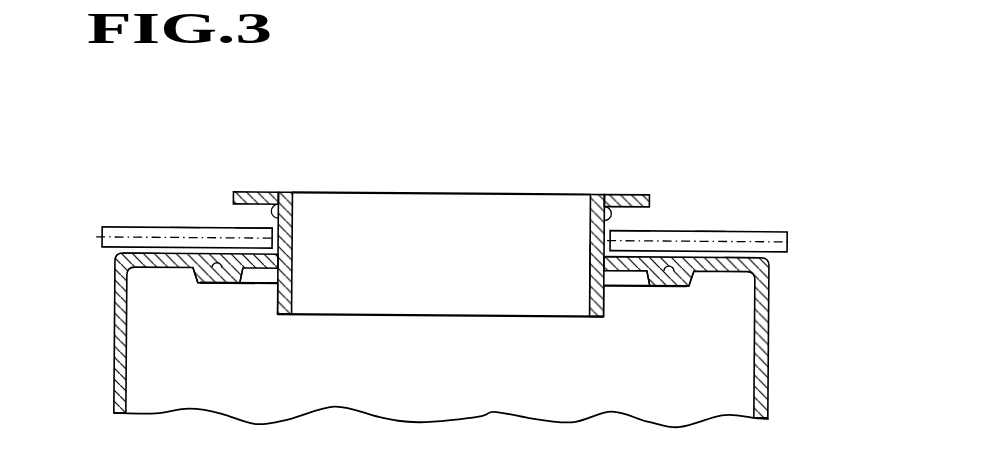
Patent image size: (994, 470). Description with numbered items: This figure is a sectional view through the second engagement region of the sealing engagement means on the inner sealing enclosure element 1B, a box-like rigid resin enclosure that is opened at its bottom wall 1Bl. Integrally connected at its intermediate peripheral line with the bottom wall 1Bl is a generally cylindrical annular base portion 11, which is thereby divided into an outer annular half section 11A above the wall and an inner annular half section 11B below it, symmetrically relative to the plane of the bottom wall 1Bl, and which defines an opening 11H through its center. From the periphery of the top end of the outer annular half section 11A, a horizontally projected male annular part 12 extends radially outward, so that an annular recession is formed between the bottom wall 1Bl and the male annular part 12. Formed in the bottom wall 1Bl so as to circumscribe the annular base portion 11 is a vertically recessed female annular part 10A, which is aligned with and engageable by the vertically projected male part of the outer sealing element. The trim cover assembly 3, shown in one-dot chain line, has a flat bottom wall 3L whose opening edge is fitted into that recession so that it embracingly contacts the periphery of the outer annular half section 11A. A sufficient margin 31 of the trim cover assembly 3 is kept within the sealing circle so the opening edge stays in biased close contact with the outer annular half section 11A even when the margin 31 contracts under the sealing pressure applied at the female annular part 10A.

The inner sealing enclosure element 1B is at (793, 327).
The bottom wall 1Bl is at (128, 252).
The vertically recessed female annular part 10A is at (216, 267).
The annular base portion 11 is at (293, 283).
The outer annular half section 11A is at (270, 191).
The inner annular half section 11B is at (278, 298).
The opening 11H is at (589, 263).
The horizontally projected male annular part 12 is at (247, 190).
The trim cover assembly 3 is at (124, 224).
The flat bottom wall 3L is at (183, 227).
The margin 31 is at (240, 228).